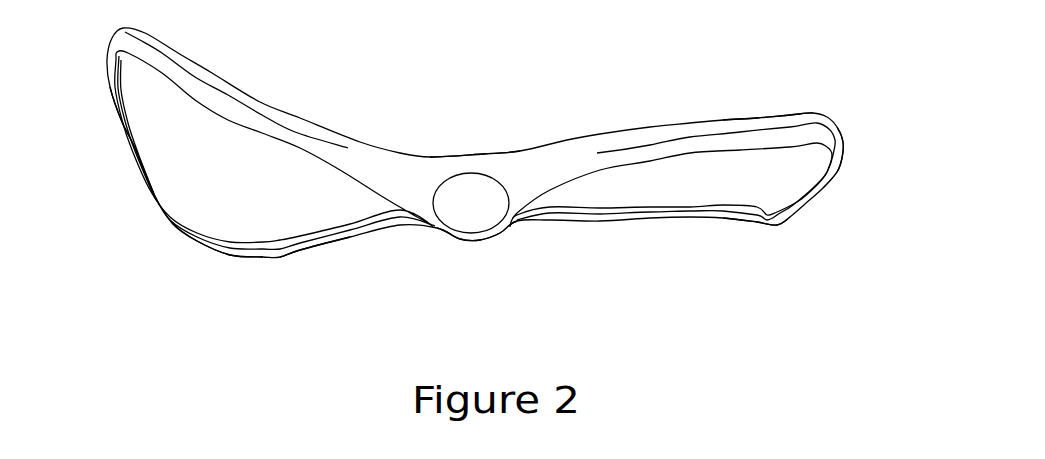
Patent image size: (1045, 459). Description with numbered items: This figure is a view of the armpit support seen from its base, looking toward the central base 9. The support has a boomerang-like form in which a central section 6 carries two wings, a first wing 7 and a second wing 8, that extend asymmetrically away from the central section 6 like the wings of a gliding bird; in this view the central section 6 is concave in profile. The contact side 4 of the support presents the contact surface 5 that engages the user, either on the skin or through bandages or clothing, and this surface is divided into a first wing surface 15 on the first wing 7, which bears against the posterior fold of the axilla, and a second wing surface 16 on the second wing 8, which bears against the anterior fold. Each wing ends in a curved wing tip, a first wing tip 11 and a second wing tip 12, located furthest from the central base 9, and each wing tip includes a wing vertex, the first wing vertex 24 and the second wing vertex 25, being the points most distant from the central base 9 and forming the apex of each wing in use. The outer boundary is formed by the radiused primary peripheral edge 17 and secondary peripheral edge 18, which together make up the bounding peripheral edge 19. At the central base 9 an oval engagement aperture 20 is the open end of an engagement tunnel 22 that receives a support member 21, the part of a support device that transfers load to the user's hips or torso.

The contact side 4 is at (235, 68).
The contact surface 5 is at (305, 115).
The central section 6 is at (488, 148).
The first wing 7 is at (90, 86).
The second wing 8 is at (825, 236).
The central base 9 is at (445, 247).
The first wing tip 11 is at (167, 230).
The second wing tip 12 is at (757, 233).
The first wing surface 15 is at (270, 97).
The second wing surface 16 is at (708, 120).
The primary peripheral edge 17 is at (763, 100).
The secondary peripheral edge 18 is at (243, 263).
The bounding peripheral edge 19 is at (320, 257).
The engagement aperture 20 is at (500, 232).
The support member 21 is at (480, 238).
The engagement tunnel 22 is at (463, 237).
The first wing vertex 24 is at (155, 205).
The second wing vertex 25 is at (775, 228).